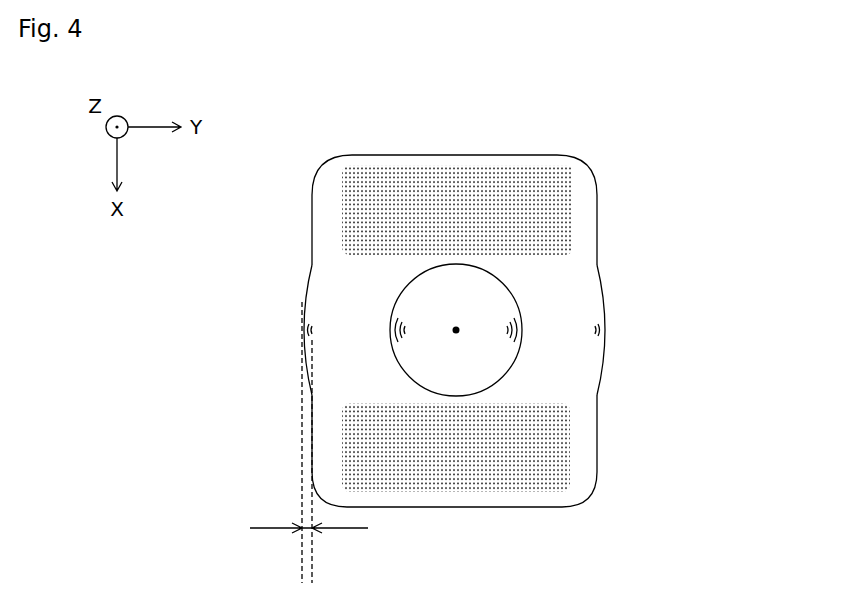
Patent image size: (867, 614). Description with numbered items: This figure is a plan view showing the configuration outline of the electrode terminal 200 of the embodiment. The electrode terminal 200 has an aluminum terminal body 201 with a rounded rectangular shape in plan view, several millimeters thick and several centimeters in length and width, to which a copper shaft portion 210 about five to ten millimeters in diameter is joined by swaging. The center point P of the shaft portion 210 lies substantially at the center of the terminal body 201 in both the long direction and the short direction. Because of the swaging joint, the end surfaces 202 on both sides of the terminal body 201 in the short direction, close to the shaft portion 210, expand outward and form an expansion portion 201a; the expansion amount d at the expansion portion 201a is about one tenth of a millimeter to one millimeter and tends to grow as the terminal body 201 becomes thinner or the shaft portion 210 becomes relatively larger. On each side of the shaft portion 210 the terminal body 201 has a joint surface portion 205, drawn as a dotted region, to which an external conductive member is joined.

The electrode terminal 200 is at (446, 325).
The terminal body 201 is at (341, 178).
The expansion portion 201a is at (274, 309).
The end surfaces 202 is at (597, 440).
The joint surface portion 205 is at (457, 190).
The shaft portion 210 is at (490, 365).
The center point P is at (458, 327).
The expansion amount d is at (309, 442).